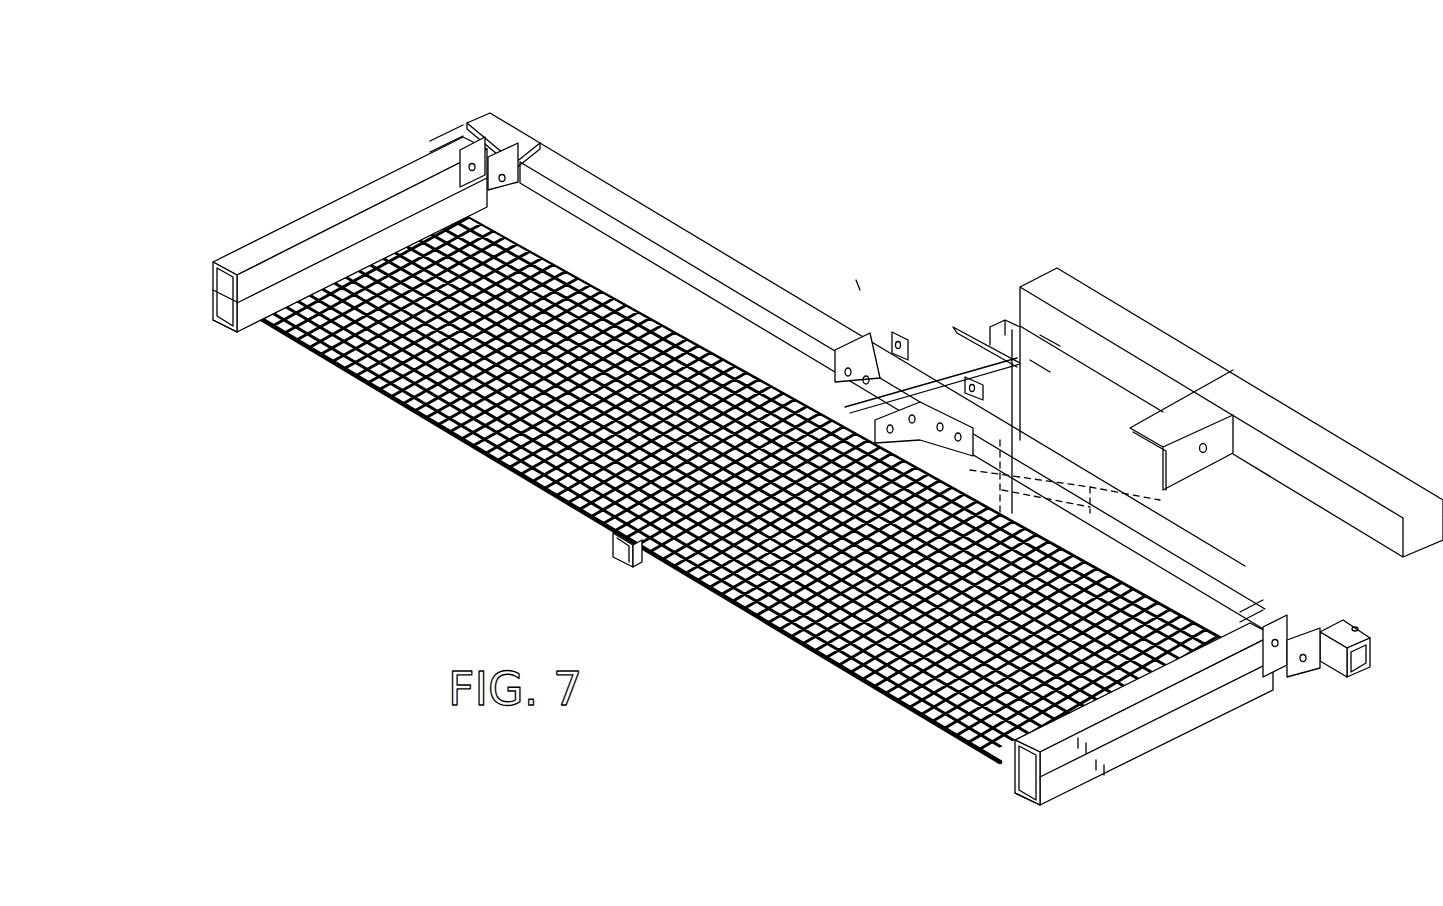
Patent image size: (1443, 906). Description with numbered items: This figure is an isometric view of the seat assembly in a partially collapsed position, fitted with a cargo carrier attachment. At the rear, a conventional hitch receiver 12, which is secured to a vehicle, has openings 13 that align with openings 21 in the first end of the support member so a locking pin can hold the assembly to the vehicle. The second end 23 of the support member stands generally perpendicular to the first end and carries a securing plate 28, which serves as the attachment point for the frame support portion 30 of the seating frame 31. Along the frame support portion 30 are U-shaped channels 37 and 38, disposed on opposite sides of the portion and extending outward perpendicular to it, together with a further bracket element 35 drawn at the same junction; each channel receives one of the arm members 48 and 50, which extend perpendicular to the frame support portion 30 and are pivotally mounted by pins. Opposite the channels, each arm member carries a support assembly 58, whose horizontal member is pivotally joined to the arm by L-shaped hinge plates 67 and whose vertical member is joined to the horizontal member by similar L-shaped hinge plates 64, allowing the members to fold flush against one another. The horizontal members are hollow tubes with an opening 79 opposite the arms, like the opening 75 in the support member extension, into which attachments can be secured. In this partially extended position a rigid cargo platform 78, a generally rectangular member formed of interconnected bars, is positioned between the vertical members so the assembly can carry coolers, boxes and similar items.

The hitch receiver 12 is at (1274, 394).
The openings 13 is at (1207, 445).
The openings 21 is at (1135, 428).
The second end 23 is at (993, 322).
The securing plate 28 is at (1032, 356).
The frame support portion 30 is at (1000, 320).
The seating frame 31 is at (856, 278).
The plate 35 is at (962, 340).
The channel 37 is at (906, 385).
The channel 38 is at (1050, 336).
The arm member 48 is at (664, 232).
The arm member 50 is at (1204, 548).
The support assembly 58 is at (372, 160).
The hinge plates 64 is at (482, 160).
The hinge plates 67 is at (512, 140).
The opening 75 is at (612, 550).
The cargo platform 78 is at (420, 390).
The opening 79 is at (216, 324).